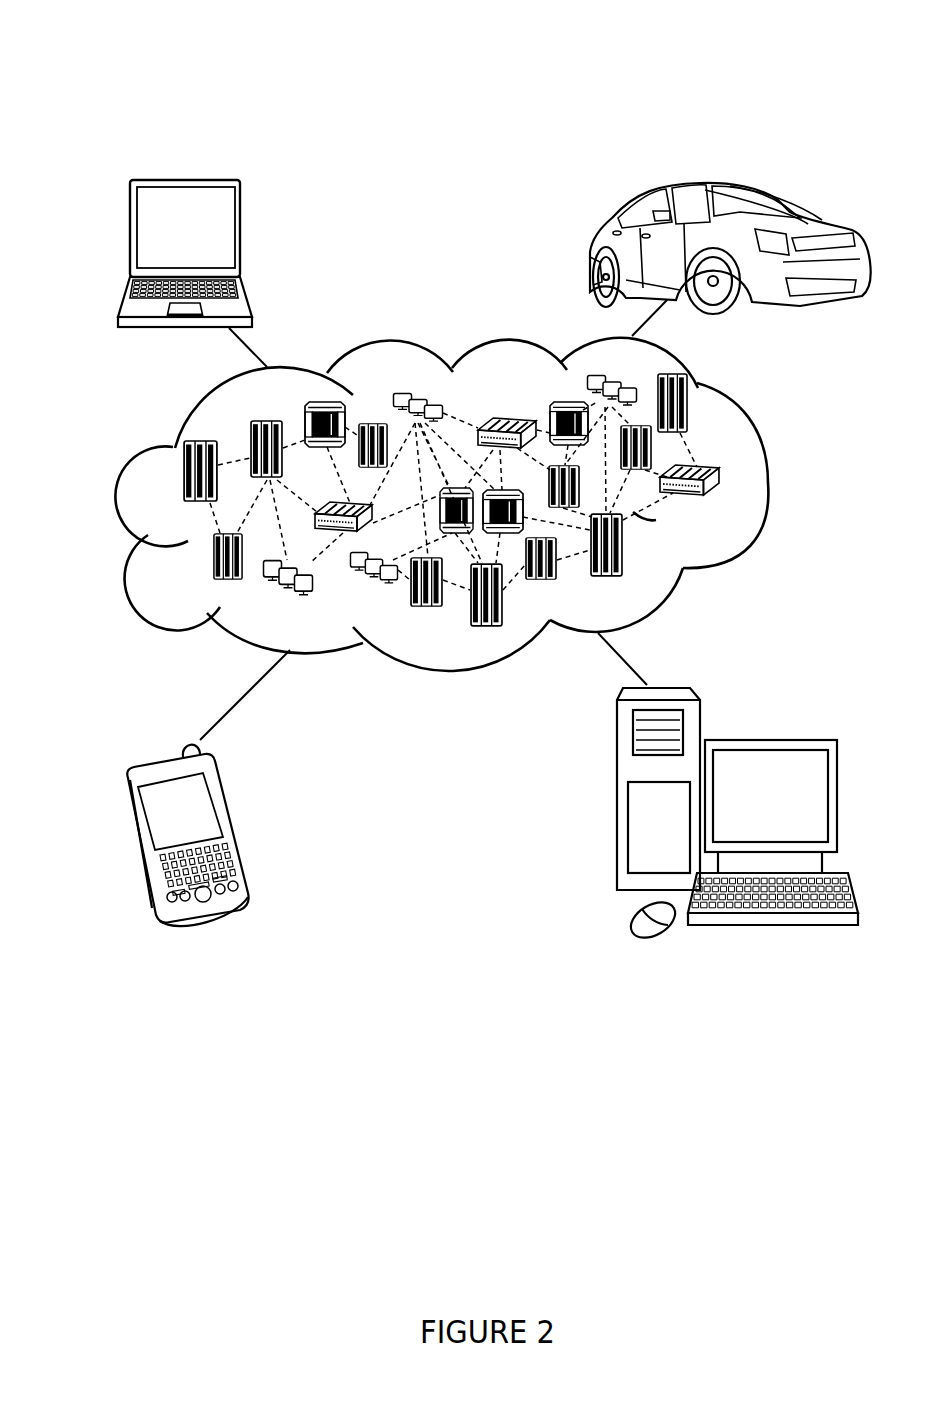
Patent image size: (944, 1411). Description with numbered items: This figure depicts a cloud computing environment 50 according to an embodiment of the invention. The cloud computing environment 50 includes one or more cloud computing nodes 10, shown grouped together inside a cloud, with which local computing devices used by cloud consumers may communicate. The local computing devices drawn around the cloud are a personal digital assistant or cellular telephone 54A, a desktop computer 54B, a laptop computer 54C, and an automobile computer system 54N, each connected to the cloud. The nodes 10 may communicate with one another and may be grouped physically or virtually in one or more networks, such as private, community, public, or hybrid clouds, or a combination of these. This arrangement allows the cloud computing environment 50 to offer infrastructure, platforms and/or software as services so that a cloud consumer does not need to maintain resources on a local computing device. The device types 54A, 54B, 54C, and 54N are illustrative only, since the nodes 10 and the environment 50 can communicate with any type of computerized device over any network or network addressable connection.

The cloud computing environment 50 is at (183, 128).
The cloud computing nodes 10 is at (727, 512).
The personal digital assistant (PDA) or cellular telephone 54A is at (233, 822).
The desktop computer 54B is at (768, 739).
The laptop computer 54C is at (242, 238).
The automobile computer system 54N is at (592, 250).